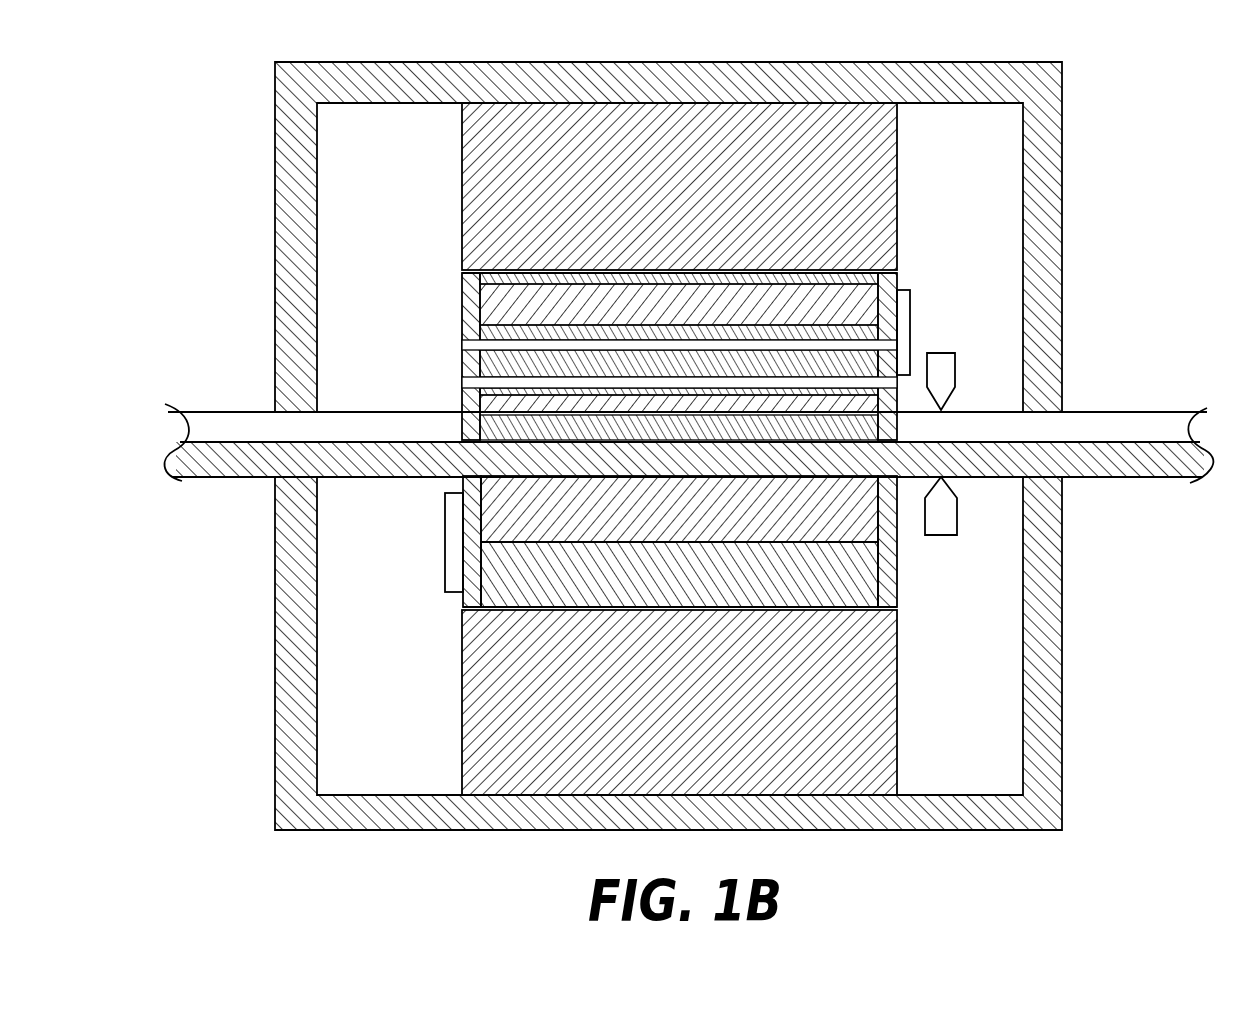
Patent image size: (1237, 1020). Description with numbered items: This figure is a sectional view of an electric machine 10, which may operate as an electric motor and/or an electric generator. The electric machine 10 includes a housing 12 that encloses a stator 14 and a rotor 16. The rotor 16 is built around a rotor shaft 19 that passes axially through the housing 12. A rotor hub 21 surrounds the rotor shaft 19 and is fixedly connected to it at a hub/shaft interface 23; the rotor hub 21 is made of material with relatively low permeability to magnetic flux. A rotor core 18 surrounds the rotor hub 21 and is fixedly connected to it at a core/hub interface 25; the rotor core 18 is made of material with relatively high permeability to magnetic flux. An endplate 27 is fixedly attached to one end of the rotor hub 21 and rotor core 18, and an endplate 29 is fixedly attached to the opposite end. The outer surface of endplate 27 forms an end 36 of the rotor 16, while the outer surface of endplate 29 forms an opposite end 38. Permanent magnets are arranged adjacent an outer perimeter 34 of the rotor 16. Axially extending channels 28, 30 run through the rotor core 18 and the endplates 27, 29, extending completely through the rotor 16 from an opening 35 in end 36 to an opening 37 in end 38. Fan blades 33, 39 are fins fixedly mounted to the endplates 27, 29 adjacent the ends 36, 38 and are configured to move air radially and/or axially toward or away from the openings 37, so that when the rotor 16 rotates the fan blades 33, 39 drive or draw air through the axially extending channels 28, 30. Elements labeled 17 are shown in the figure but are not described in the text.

The electric machine 10 is at (674, 446).
The housing 12 is at (292, 585).
The stator 14 is at (688, 204).
The rotor 16 is at (912, 590).
The sensor 17 is at (938, 363).
The rotor core 18 is at (688, 589).
The rotor shaft 19 is at (1128, 443).
The rotor hub 21 is at (688, 522).
The hub/shaft interface 23 is at (546, 477).
The core/hub interface 25 is at (878, 545).
The endplate 27 is at (897, 240).
The axially extending channel 28 is at (810, 380).
The endplate 29 is at (472, 272).
The axially extending channel 30 is at (737, 343).
The fan blades 33 is at (903, 323).
The outer perimeter 34 is at (510, 273).
The opening 35 is at (897, 380).
The end 36 is at (900, 282).
The opening 37 is at (462, 340).
The end 38 is at (462, 293).
The fan blades 39 is at (445, 538).